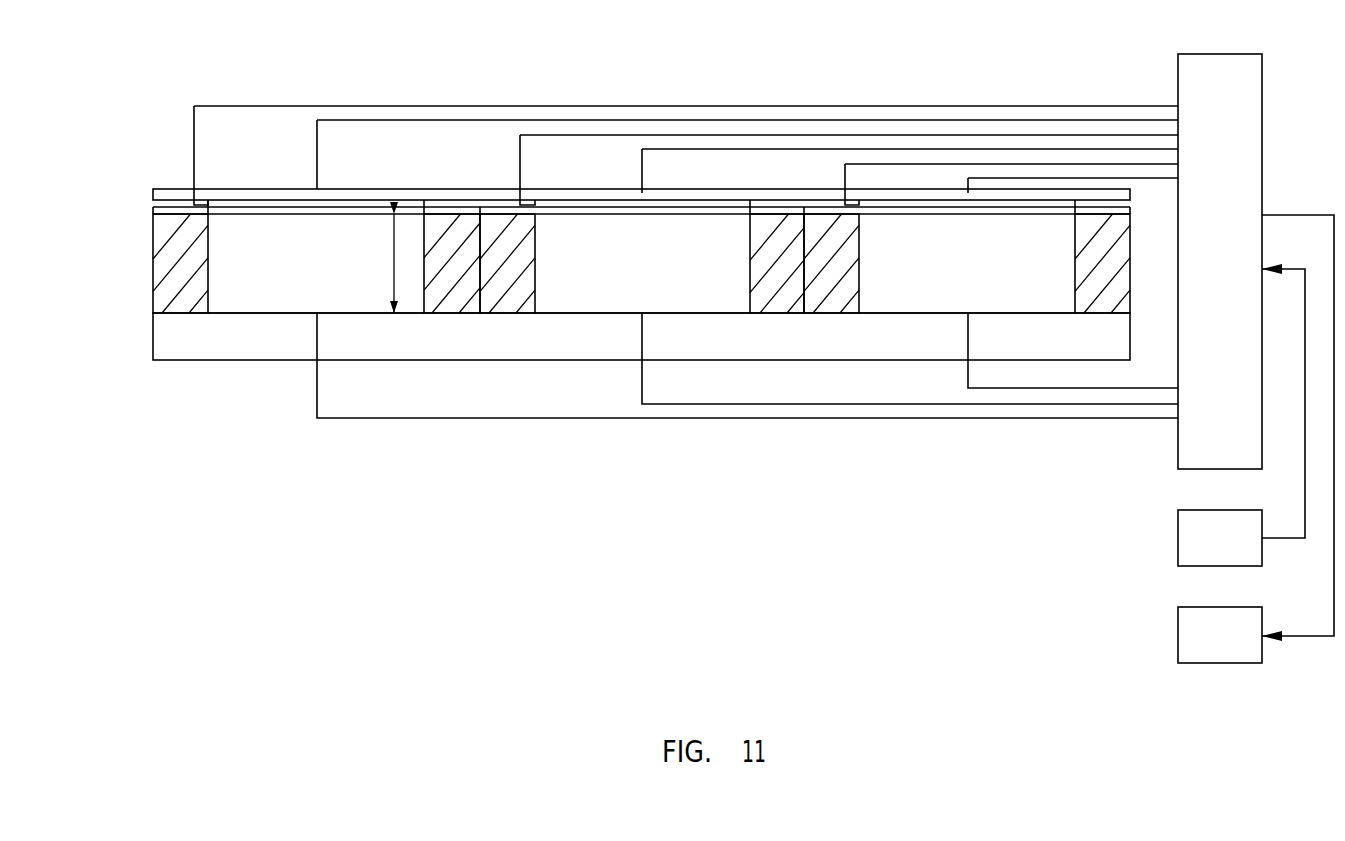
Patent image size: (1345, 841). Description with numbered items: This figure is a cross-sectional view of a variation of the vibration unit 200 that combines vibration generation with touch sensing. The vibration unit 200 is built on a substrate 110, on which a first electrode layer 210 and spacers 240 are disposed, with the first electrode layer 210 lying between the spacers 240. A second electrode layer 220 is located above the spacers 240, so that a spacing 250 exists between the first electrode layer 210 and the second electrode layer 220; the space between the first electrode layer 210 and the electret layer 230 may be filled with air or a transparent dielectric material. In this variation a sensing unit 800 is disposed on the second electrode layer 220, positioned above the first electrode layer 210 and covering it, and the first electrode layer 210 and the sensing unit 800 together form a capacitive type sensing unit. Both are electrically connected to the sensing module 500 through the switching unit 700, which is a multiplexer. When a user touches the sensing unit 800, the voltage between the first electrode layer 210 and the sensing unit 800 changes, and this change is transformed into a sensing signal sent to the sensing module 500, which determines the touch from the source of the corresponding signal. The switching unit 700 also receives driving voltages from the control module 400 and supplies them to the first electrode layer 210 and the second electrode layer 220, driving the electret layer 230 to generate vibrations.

The substrate 110 is at (228, 351).
The vibration unit 200 is at (619, 268).
The first electrode layer 210 is at (226, 310).
The second electrode layer 220 is at (262, 203).
The electret layer 230 is at (165, 211).
The spacers 240 is at (173, 257).
The spacing 250 is at (373, 263).
The control module 400 is at (1203, 560).
The sensing module 500 is at (1203, 656).
The switching unit 700 is at (1203, 295).
The sensing unit 800 is at (450, 202).